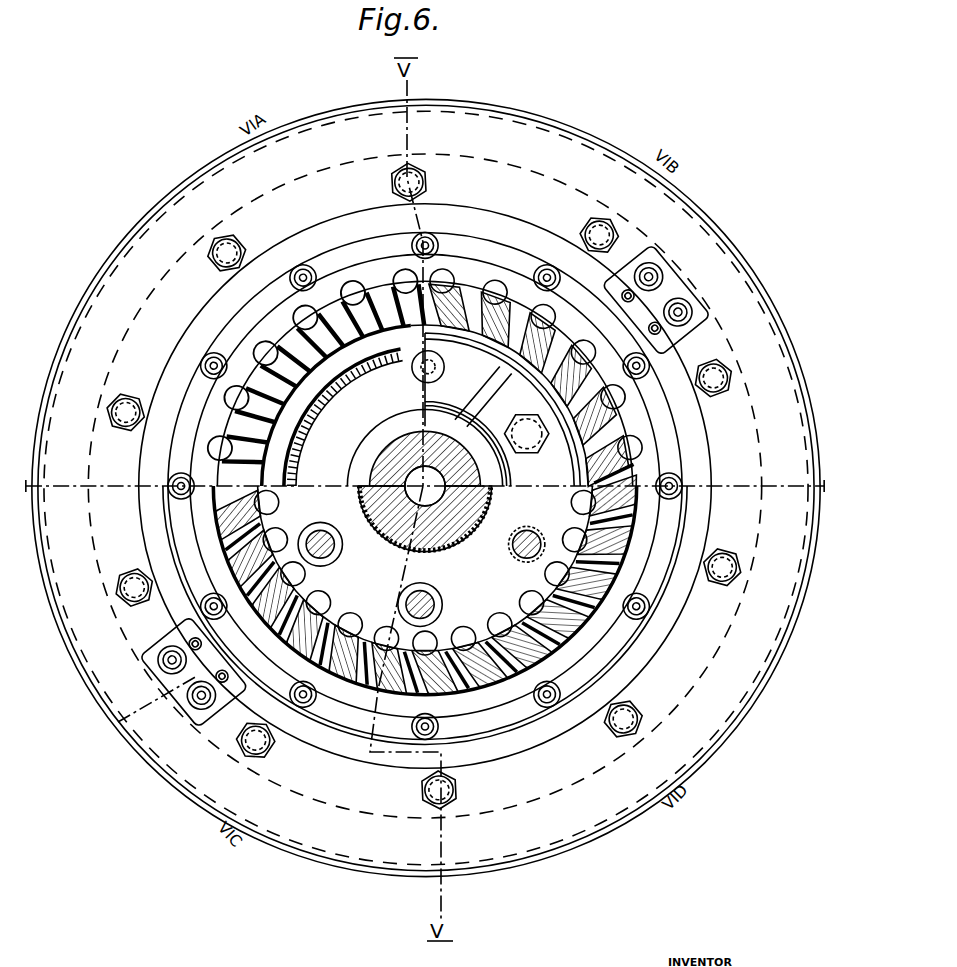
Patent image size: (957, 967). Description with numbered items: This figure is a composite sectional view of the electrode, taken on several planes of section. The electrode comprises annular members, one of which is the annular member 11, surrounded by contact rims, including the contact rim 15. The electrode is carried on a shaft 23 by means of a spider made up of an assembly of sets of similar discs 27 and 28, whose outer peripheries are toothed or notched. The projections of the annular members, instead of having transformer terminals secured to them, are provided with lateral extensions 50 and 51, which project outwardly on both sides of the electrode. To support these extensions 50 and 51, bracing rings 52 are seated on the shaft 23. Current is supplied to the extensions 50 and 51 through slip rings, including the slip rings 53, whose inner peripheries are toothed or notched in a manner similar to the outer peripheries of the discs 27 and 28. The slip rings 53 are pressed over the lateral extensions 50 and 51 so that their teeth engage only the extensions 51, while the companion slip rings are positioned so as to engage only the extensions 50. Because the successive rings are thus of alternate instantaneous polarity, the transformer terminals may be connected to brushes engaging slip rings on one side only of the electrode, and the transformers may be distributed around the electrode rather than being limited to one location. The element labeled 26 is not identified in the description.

The annular member 11 is at (348, 723).
The contact rim 15 is at (647, 308).
The shaft 23 is at (447, 525).
The sector plate 26 is at (533, 467).
The disc 27 is at (555, 510).
The disc 28 is at (300, 618).
The lateral extension 50 is at (352, 300).
The lateral extension 51 is at (408, 292).
The bracing ring 52 is at (318, 465).
The slip ring 53 is at (473, 263).